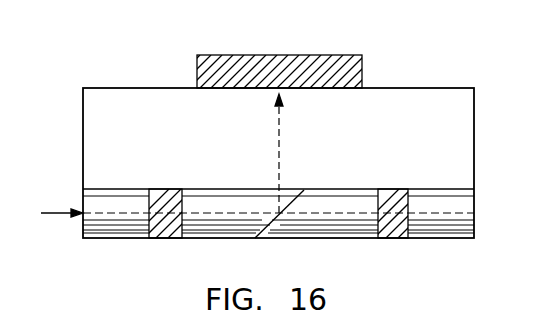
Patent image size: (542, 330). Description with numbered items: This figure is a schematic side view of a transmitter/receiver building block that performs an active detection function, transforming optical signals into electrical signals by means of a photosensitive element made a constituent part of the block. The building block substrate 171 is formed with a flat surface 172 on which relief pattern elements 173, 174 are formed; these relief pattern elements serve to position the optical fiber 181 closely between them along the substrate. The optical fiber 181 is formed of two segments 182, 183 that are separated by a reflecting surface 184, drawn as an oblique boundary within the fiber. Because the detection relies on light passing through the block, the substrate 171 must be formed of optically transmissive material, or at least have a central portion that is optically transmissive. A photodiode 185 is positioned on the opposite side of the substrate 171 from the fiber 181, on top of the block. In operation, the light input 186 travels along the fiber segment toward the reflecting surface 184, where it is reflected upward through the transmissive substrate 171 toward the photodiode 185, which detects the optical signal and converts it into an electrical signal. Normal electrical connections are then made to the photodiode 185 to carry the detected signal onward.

The building block substrate 171 is at (449, 88).
The flat surface 172 is at (473, 199).
The relief pattern element 173 is at (163, 238).
The relief pattern element 174 is at (400, 240).
The optical fiber 181 is at (91, 239).
The fiber segment 182 is at (194, 244).
The fiber segment 183 is at (474, 237).
The reflecting surface 184 is at (316, 180).
The photodiode 185 is at (340, 55).
The light input 186 is at (73, 208).